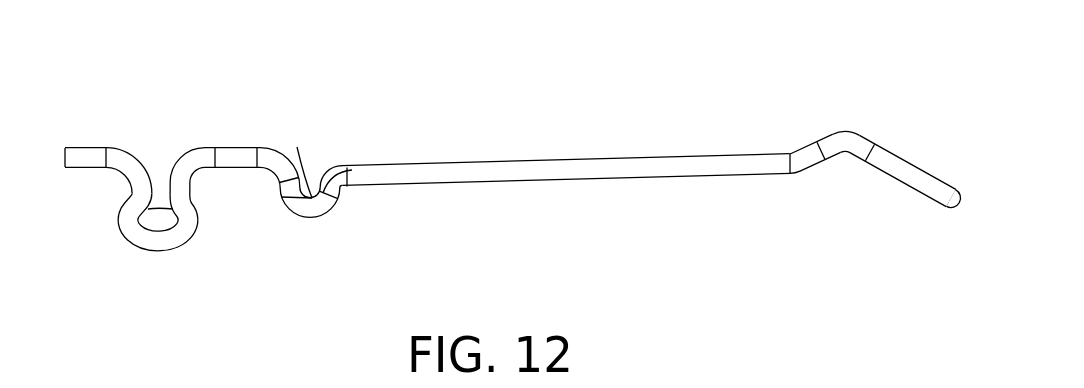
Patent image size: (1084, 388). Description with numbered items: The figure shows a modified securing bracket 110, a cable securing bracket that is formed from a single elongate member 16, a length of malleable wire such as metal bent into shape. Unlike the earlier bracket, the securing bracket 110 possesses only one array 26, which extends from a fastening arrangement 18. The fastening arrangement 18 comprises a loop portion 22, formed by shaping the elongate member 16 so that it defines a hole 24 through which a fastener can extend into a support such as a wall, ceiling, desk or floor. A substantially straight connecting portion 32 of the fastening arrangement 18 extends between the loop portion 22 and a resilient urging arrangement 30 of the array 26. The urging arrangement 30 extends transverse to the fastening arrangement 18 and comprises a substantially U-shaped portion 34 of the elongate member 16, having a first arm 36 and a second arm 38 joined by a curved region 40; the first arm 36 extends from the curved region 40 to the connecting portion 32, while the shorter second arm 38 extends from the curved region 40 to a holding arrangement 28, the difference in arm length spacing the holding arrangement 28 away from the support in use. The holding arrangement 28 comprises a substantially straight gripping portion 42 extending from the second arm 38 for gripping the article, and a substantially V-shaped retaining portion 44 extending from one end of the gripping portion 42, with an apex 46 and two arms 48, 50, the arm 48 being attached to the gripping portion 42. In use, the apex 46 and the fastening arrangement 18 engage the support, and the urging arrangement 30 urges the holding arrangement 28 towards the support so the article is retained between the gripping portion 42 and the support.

The securing bracket 110 is at (508, 166).
The elongate member 16 is at (744, 148).
The fastening arrangement 18 is at (117, 230).
The loop portion 22 is at (183, 235).
The hole 24 is at (150, 208).
The array 26 is at (344, 162).
The holding arrangement 28 is at (586, 188).
The urging arrangement 30 is at (318, 228).
The connecting portion 32 is at (233, 148).
The U-shaped portion 34 is at (332, 212).
The first arm 36 is at (288, 197).
The second arm 38 is at (338, 200).
The curved region 40 is at (298, 158).
The gripping portion 42 is at (623, 163).
The retaining portion 44 is at (952, 183).
The apex 46 is at (852, 133).
The arm 48 is at (817, 148).
The arm 50 is at (913, 182).